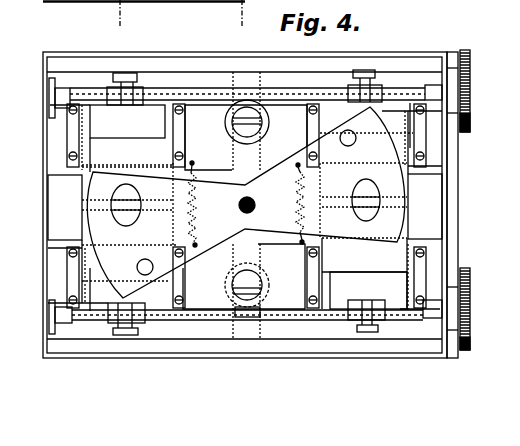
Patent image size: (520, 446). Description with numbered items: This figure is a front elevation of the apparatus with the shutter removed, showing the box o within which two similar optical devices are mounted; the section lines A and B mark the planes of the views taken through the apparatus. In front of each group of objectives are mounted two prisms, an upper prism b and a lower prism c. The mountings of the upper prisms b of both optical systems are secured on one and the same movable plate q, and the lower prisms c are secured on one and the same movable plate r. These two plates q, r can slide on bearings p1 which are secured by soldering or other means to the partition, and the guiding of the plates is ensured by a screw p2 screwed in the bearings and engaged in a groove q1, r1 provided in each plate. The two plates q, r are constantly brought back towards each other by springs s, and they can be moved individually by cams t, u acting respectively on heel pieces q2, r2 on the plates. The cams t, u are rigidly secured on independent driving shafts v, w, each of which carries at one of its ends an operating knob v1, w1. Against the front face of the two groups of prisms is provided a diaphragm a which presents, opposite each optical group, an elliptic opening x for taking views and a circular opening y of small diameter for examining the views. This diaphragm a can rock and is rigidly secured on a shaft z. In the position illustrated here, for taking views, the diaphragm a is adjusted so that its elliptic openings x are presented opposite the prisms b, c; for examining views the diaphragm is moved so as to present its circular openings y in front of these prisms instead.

The section line A is at (108, 13).
The section line B is at (233, 13).
The box o is at (190, 52).
The driving shaft w is at (200, 96).
The operating knob w1 is at (472, 90).
The driving shaft v is at (217, 313).
The operating knob v1 is at (472, 313).
The cam u is at (125, 103).
The heel piece r2 is at (125, 73).
The cam t is at (124, 325).
The heel piece q2 is at (129, 335).
The movable plate r is at (246, 206).
The groove r1 is at (235, 133).
The lower prism c is at (393, 137).
The upper prism b is at (244, 274).
The diaphragm a is at (244, 202).
The bearing p1 is at (262, 152).
The screw p2 is at (276, 286).
The movable plate q is at (202, 284).
The groove q1 is at (238, 276).
The elliptic opening x is at (121, 221).
The circular opening y is at (137, 265).
The shaft z is at (256, 206).
The spring s is at (198, 210).